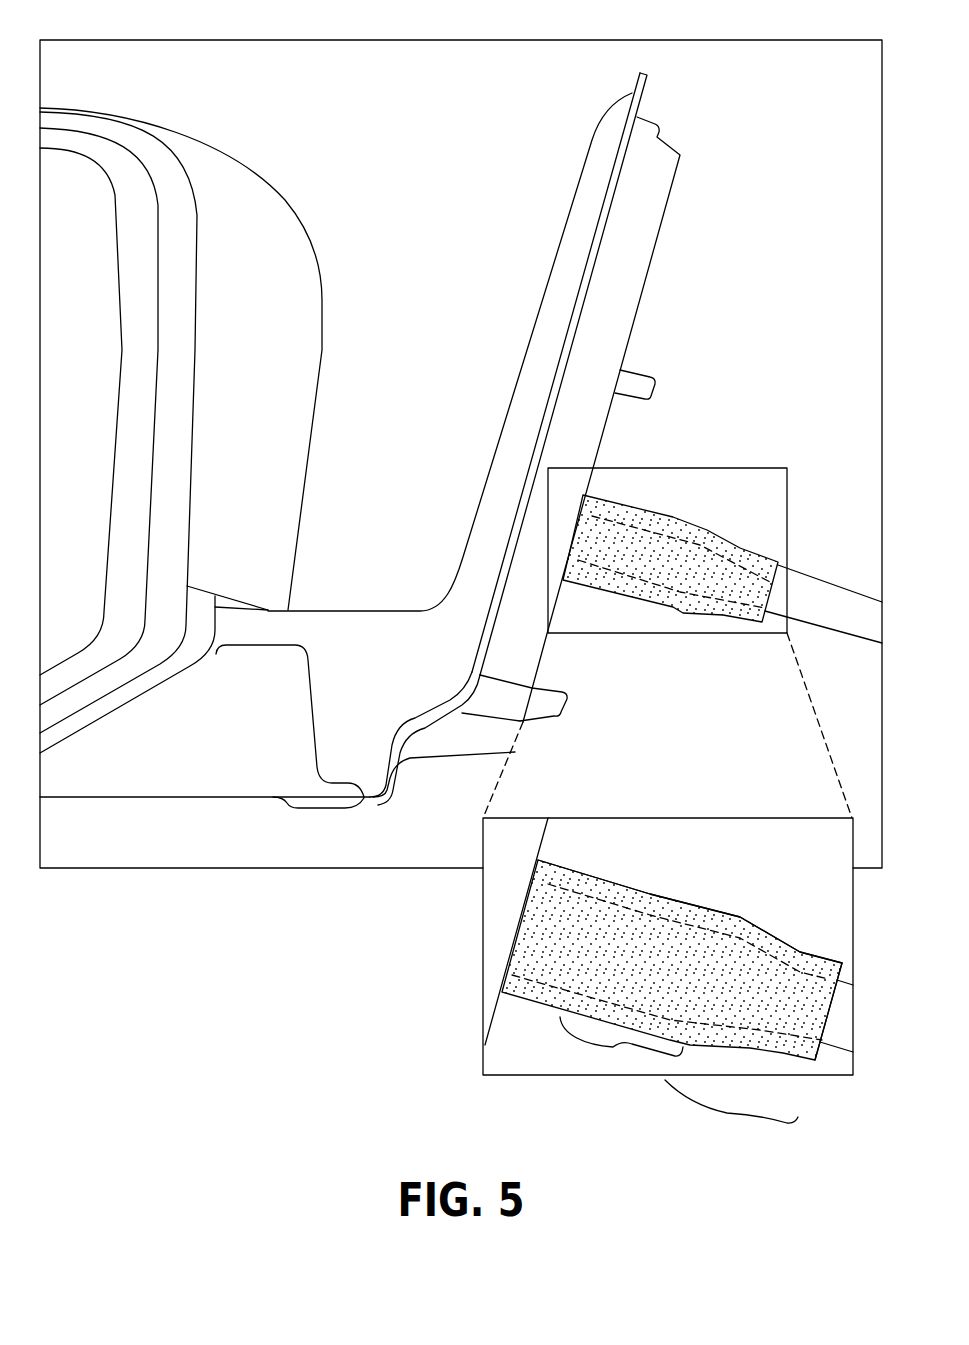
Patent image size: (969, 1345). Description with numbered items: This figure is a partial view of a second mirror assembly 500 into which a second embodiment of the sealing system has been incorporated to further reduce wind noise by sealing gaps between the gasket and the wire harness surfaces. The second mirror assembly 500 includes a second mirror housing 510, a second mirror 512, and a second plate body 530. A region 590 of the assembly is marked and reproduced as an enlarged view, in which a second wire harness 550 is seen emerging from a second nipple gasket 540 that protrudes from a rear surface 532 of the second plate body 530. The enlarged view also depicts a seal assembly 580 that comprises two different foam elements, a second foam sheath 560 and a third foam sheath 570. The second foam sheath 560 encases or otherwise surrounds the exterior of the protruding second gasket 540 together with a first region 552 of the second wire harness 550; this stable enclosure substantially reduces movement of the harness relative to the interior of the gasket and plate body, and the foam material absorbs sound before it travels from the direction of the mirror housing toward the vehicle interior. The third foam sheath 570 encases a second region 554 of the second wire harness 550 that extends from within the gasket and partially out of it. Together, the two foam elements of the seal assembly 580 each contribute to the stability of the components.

The second mirror assembly 500 is at (222, 422).
The second mirror housing 510 is at (294, 257).
The second mirror 512 is at (68, 193).
The second plate body 530 is at (726, 179).
The rear surface 532 is at (558, 834).
The second nipple gasket 540 is at (520, 932).
The second wire harness 550 is at (840, 1032).
The first region 552 is at (727, 1113).
The second region 554 is at (613, 1047).
The second foam sheath 560 is at (690, 902).
The third foam sheath 570 is at (667, 902).
The seal assembly 580 is at (629, 968).
The region 590 is at (725, 468).